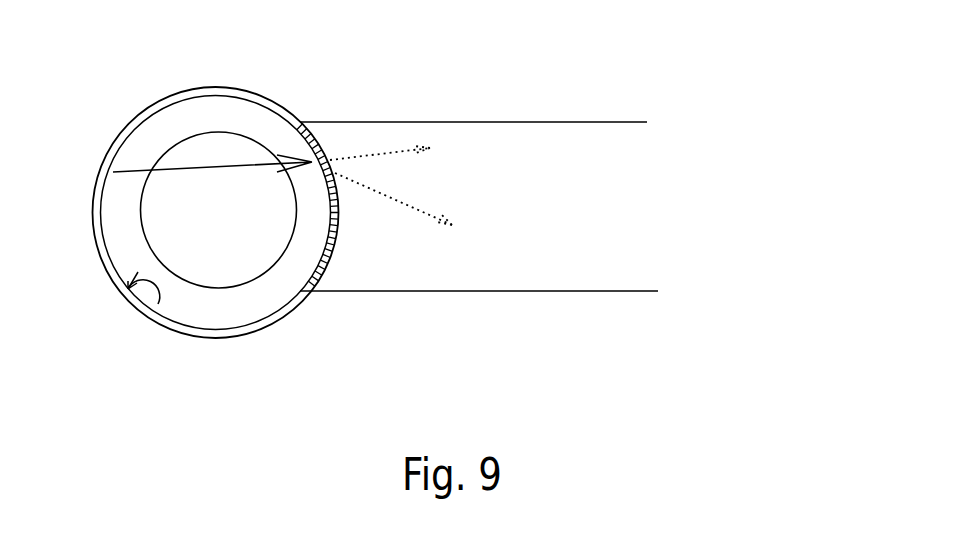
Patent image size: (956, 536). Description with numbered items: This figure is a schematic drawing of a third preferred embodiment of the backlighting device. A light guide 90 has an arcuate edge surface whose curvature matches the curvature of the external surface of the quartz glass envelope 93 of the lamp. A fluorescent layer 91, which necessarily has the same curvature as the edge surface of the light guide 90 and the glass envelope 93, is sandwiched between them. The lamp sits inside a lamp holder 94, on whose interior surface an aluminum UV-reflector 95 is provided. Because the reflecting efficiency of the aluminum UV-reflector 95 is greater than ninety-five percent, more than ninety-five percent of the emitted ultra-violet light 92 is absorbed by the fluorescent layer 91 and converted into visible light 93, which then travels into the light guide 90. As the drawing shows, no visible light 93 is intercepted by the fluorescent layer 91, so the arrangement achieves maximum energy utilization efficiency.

The light guide 90 is at (590, 217).
The fluorescent layer 91 is at (311, 129).
The ultra-violet light 92 is at (122, 205).
The quartz glass envelope / visible light 93 is at (198, 388).
The lamp holder 94 is at (280, 327).
The aluminum UV-reflector 95 is at (152, 314).